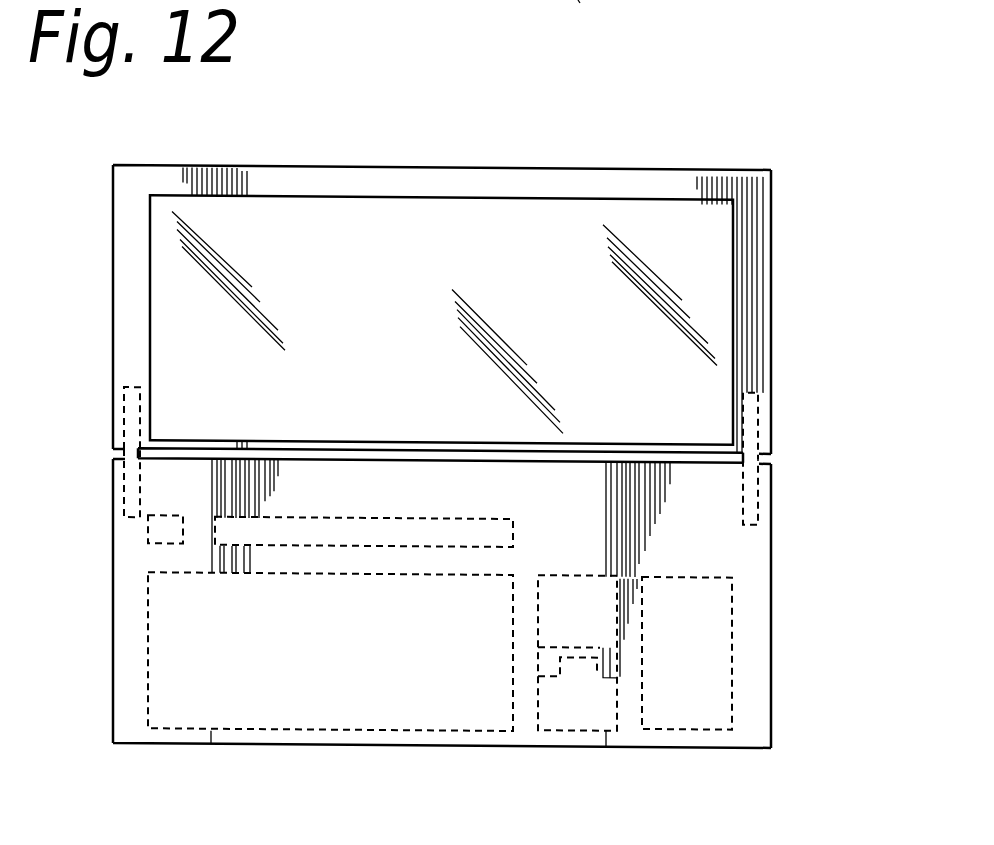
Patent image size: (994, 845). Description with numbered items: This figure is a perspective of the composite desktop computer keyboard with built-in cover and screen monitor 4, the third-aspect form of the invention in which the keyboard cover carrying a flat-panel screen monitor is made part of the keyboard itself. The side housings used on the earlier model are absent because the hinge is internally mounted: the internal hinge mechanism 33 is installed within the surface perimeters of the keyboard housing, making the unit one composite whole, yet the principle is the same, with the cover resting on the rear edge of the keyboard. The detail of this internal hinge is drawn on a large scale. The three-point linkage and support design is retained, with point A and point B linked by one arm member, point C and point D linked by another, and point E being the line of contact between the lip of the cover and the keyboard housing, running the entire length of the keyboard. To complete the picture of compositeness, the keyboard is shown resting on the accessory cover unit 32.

The composite desktop computer keyboard with built-in cover and screen monitor 4 is at (772, 308).
The accessory cover unit 32 is at (632, 0).
The internal hinge mechanism 33 is at (135, 413).
The point A is at (752, 397).
The point B is at (755, 518).
The point C is at (133, 428).
The point D is at (130, 513).
The point E is at (118, 455).